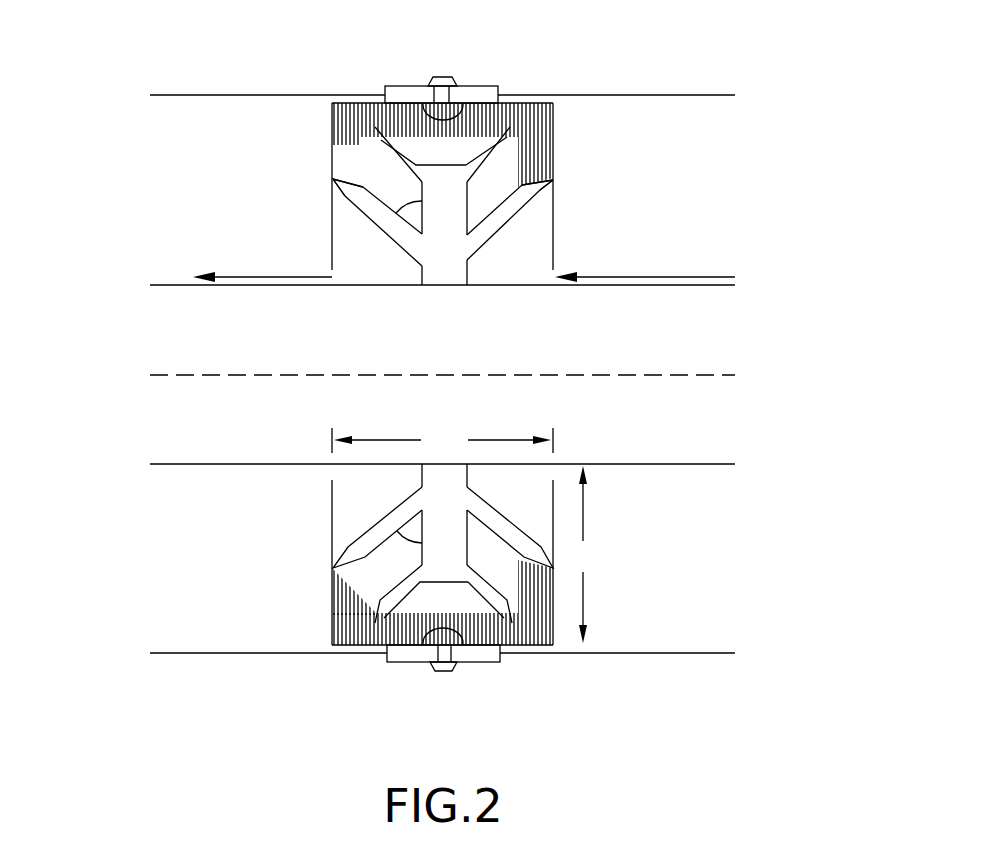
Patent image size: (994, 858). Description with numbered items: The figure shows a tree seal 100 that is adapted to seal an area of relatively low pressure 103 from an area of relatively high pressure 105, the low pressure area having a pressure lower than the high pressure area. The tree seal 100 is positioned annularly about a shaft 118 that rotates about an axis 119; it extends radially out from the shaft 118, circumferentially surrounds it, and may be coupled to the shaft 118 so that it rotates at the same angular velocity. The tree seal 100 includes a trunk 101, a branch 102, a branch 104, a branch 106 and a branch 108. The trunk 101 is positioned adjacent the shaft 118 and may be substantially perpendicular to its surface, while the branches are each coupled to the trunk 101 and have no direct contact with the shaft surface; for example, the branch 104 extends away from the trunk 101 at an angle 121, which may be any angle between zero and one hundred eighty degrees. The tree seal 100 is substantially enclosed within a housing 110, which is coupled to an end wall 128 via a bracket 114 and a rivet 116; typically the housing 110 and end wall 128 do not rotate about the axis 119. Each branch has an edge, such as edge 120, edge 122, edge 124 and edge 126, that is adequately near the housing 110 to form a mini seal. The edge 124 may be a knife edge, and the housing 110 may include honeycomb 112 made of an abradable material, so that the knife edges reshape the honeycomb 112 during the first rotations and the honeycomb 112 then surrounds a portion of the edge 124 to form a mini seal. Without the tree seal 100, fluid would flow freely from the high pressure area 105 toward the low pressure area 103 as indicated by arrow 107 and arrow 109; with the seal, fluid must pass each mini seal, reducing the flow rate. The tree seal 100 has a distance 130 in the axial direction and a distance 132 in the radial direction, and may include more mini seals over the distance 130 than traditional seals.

The tree seal 100 is at (439, 368).
The trunk 101 is at (455, 265).
The branch 102 is at (515, 210).
The area of relatively low pressure 103 is at (188, 172).
The branch 104 is at (388, 230).
The area of relatively high pressure 105 is at (698, 175).
The branch 106 is at (397, 155).
The arrow 107 is at (630, 287).
The branch 108 is at (515, 148).
The arrow 109 is at (265, 287).
The housing 110 is at (528, 103).
The honeycomb 112 is at (538, 120).
The bracket 114 is at (400, 85).
The rivet 116 is at (456, 80).
The shaft 118 is at (442, 325).
The axis 119 is at (237, 377).
The edge 120 is at (380, 140).
The angle 121 is at (407, 207).
The edge 122 is at (508, 136).
The edge 124 is at (345, 182).
The edge 126 is at (540, 190).
The end wall 128 is at (226, 94).
The distance 130 is at (442, 438).
The distance 132 is at (590, 554).